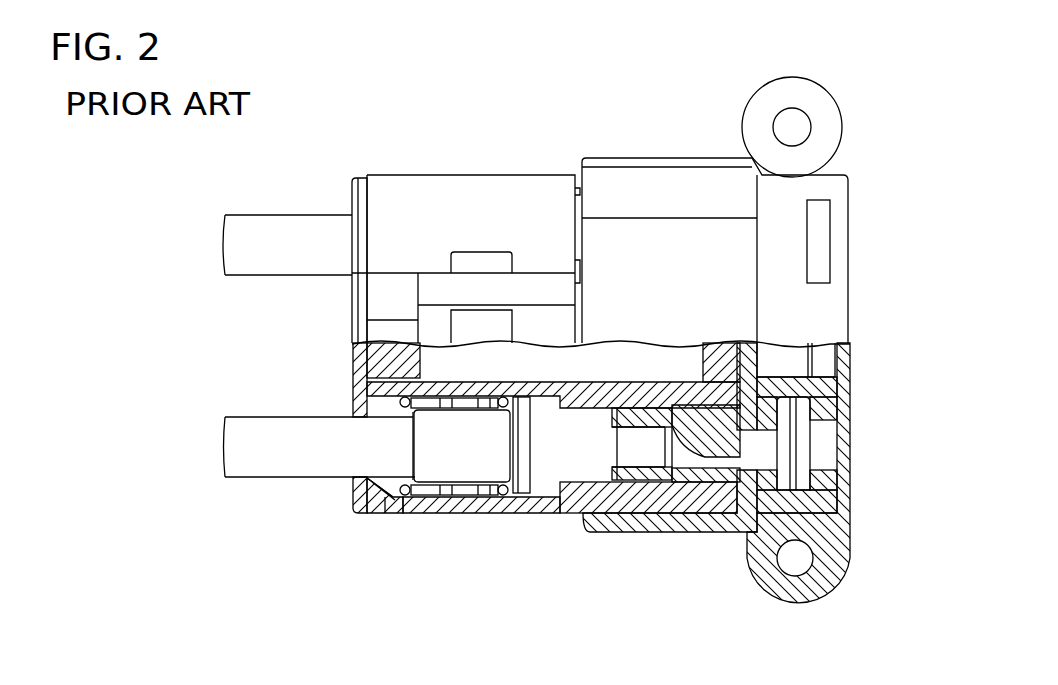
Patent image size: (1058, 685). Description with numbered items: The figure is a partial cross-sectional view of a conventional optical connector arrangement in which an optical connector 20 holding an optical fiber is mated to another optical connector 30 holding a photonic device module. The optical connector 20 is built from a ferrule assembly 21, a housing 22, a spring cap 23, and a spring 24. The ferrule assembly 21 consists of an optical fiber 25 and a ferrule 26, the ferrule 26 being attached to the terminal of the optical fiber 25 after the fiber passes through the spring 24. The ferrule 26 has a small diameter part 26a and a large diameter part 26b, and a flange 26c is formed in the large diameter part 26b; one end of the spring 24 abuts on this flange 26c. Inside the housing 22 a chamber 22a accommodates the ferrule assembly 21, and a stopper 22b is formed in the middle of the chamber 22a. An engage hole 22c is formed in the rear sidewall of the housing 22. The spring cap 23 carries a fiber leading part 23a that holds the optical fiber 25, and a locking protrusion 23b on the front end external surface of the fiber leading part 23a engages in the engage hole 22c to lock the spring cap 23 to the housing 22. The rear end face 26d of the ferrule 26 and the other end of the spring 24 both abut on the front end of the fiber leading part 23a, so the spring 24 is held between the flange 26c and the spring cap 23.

The optical connector 20 is at (498, 172).
The ferrule assembly 21 is at (298, 415).
The housing 22 is at (530, 380).
The chamber 22a is at (545, 492).
The stopper 22b is at (555, 490).
The engage hole 22c is at (395, 512).
The spring cap 23 is at (319, 351).
The fiber leading part 23a is at (358, 512).
The locking protrusion 23b is at (388, 508).
The spring 24 is at (420, 497).
The optical fiber 25 is at (247, 478).
The ferrule 26 is at (699, 514).
The small diameter part 26a is at (655, 447).
The large diameter part 26b is at (457, 462).
The flange 26c is at (520, 490).
The rear end face 26d is at (412, 448).
The optical connector 30 is at (648, 157).